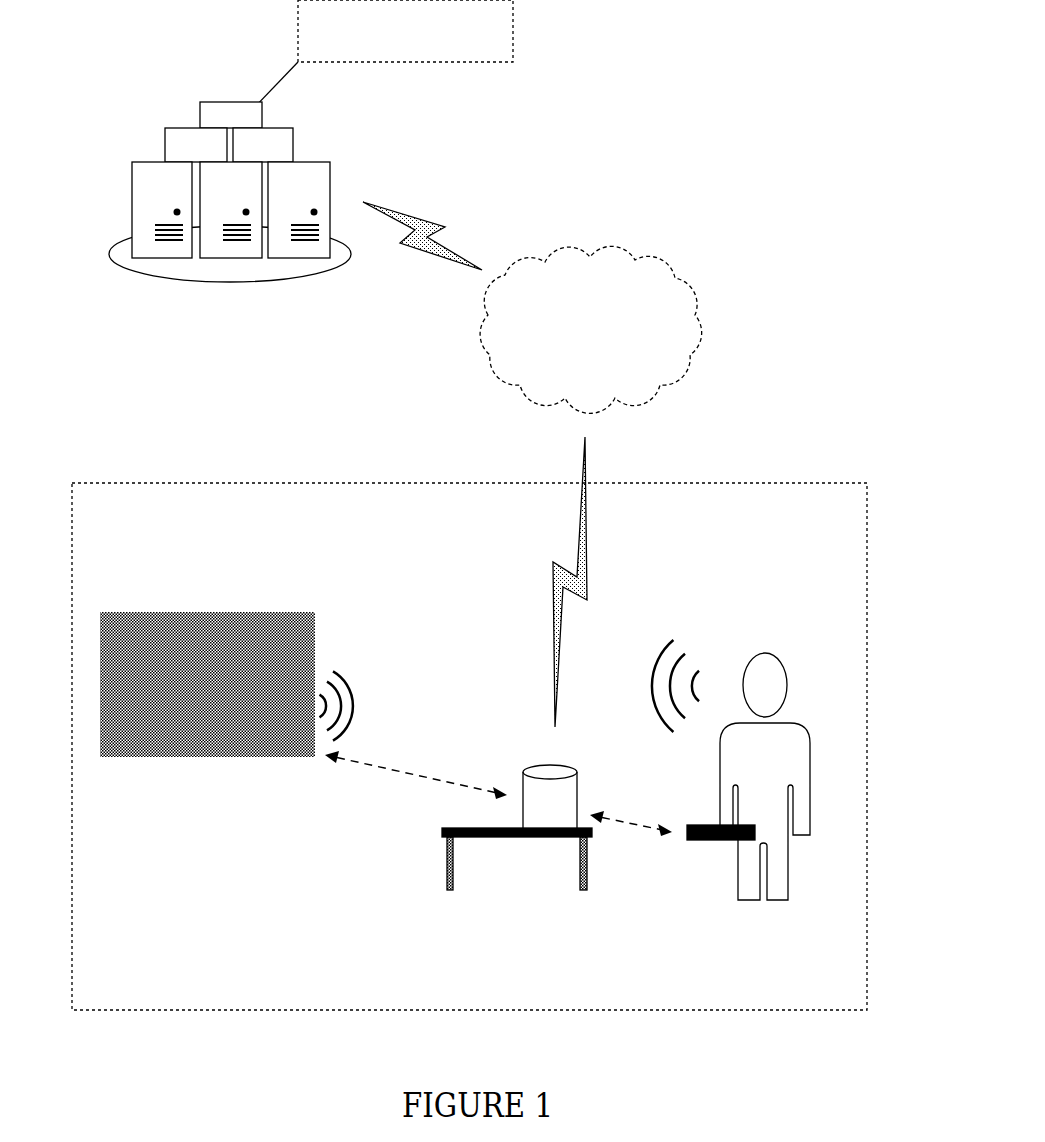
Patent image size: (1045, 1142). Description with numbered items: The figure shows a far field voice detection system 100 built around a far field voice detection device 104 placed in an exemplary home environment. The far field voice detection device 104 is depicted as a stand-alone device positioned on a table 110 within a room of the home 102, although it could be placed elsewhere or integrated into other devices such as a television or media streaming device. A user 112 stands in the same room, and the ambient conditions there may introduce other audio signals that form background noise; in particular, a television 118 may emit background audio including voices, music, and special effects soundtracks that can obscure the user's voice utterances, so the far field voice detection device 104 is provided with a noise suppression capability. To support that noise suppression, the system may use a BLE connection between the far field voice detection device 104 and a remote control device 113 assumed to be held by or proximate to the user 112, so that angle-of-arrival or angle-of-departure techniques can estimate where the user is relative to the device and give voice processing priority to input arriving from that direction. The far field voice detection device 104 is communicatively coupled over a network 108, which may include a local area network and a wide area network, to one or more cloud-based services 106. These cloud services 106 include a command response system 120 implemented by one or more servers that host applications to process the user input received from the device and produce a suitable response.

The far field voice detection system 100 is at (786, 244).
The home 102 is at (830, 531).
The far field voice detection device 104 is at (537, 788).
The cloud-based services 106 is at (260, 250).
The network 108 is at (591, 329).
The table 110 is at (450, 853).
The user 112 is at (785, 753).
The remote control device 113 is at (708, 842).
The television 118 is at (208, 628).
The command response system 120 is at (382, 55).